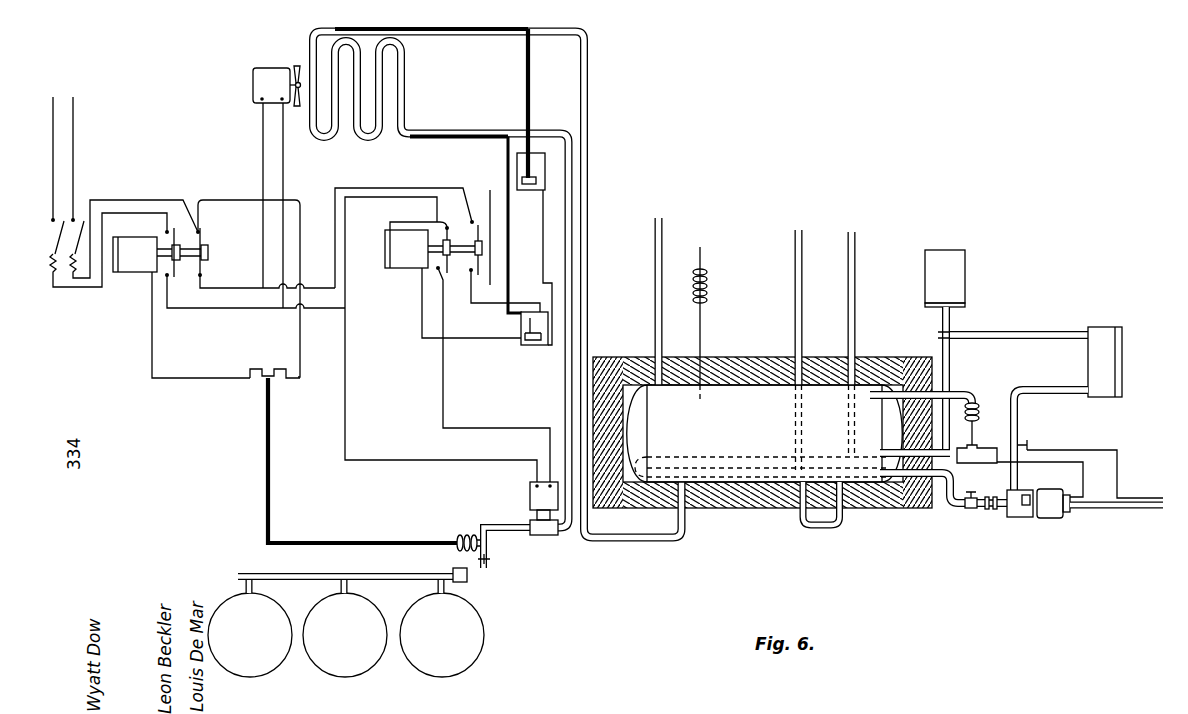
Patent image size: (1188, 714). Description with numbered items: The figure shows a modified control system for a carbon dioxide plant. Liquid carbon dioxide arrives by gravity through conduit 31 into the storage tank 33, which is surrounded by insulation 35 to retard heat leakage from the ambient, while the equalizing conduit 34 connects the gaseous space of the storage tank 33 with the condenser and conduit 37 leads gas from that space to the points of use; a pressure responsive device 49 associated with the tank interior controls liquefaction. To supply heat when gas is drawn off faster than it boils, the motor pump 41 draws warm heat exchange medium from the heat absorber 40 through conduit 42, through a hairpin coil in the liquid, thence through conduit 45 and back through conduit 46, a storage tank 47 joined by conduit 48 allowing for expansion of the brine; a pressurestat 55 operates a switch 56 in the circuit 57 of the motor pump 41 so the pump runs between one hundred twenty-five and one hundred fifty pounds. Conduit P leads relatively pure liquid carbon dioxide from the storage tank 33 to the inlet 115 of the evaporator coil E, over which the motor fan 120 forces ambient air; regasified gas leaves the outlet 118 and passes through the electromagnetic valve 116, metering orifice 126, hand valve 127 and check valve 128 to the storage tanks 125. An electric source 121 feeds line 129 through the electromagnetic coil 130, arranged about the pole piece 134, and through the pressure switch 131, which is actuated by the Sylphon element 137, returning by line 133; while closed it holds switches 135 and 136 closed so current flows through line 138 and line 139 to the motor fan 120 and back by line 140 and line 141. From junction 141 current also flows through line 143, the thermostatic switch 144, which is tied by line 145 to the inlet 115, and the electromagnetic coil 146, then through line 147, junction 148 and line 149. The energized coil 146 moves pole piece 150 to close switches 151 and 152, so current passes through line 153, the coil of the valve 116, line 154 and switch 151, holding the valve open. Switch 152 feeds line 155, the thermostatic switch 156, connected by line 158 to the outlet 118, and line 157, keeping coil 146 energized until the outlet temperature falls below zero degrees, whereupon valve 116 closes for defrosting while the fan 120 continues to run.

The evaporator coil E is at (497, 285).
The conduit P is at (590, 266).
The conduit 31 is at (800, 300).
The storage tank 33 is at (765, 433).
The equalizing conduit 34 is at (855, 276).
The insulation 35 is at (735, 357).
The conduit 37 is at (657, 274).
The heat absorber 40 is at (1115, 356).
The motor pump 41 is at (1052, 522).
The conduit 42 is at (1030, 327).
The conduit 45 is at (946, 508).
The conduit 46 is at (1057, 384).
The storage tank 47 is at (962, 272).
The conduit 48 is at (951, 320).
The pressure responsive device 49 is at (708, 288).
The pressurestat 55 is at (979, 412).
The switch 56 is at (972, 463).
The circuit 57 is at (1148, 510).
The inlet 115 is at (333, 30).
The electromagnetic valve 116 is at (530, 493).
The outlet 118 is at (459, 149).
The motor fan 120 is at (277, 86).
The electric source 121 is at (75, 150).
The storage tanks 125 is at (418, 652).
The metering orifice 126 is at (530, 535).
The hand valve 127 is at (496, 562).
The check valve 128 is at (470, 585).
The line 129 is at (75, 290).
The electromagnetic coil 130 is at (181, 307).
The pressure switch 131 is at (268, 368).
The line 133 is at (157, 201).
The pole piece 134 is at (210, 250).
The switch 135 is at (176, 279).
The switch 136 is at (204, 243).
The pressure Sylphon element 137 is at (470, 527).
The line 138 is at (367, 206).
The line 139 is at (286, 162).
The line 140 is at (262, 138).
The line 141 is at (470, 198).
The line 143 is at (490, 190).
The thermostatic switch 144 is at (538, 166).
The line 145 is at (531, 86).
The electromagnetic coil 146 is at (406, 249).
The line 147 is at (406, 226).
The junction 148 is at (456, 239).
The line 149 is at (213, 296).
The pole piece 150 is at (484, 252).
The switch 151 is at (450, 224).
The switch 152 is at (482, 245).
The line 153 is at (376, 188).
The line 154 is at (475, 428).
The line 155 is at (507, 290).
The thermostatic switch 156 is at (542, 320).
The line 157 is at (471, 303).
The line 158 is at (514, 283).